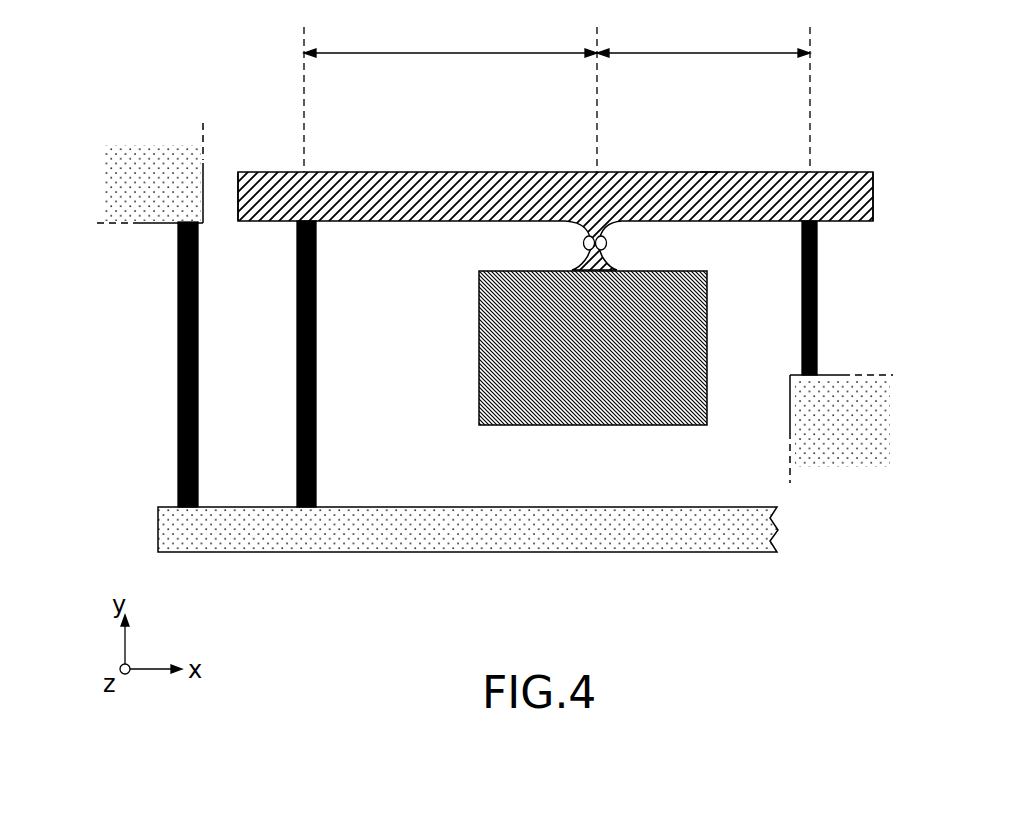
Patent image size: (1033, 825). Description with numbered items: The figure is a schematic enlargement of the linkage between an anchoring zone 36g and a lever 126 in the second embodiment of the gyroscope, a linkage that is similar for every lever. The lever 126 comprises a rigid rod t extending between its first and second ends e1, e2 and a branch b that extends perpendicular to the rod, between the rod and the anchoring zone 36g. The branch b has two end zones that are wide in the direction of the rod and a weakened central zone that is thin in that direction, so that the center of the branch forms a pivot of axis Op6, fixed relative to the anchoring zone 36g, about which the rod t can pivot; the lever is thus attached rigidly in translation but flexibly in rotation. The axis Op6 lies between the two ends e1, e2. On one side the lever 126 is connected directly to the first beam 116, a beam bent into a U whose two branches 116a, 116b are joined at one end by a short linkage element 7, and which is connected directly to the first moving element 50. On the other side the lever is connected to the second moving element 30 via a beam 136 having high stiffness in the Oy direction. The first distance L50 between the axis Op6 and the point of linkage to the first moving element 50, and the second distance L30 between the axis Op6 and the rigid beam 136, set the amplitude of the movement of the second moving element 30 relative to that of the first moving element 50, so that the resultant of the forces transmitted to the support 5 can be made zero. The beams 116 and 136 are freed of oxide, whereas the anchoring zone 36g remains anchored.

The support 5 is at (557, 537).
The linkage element 7 is at (267, 542).
The second moving element 30 is at (855, 442).
The anchoring zone 36g is at (507, 342).
The first moving element 50 is at (152, 171).
The first beam 116 is at (85, 250).
The branch of first beam 116a is at (178, 345).
The branch of first beam 116b is at (297, 345).
The lever 126 is at (410, 172).
The beam 136 is at (818, 308).
The first end of lever e1 is at (238, 177).
The second end of lever e2 is at (873, 188).
The rigid rod t is at (706, 172).
The branch b is at (576, 240).
The pivot axis Op6 is at (623, 242).
The first distance L50 is at (450, 94).
The second distance L30 is at (703, 94).